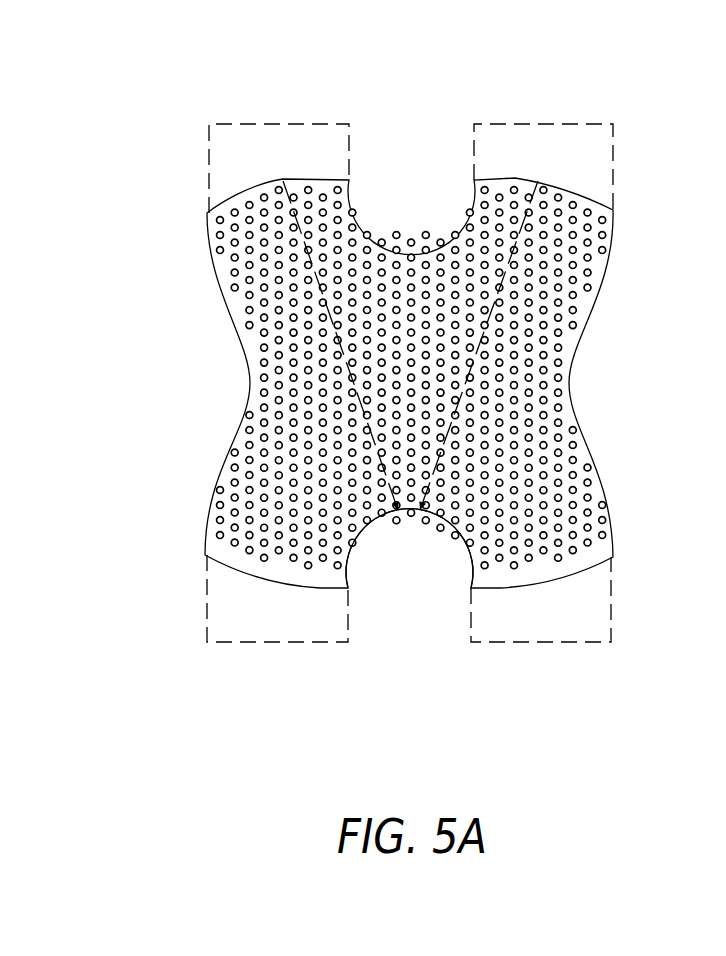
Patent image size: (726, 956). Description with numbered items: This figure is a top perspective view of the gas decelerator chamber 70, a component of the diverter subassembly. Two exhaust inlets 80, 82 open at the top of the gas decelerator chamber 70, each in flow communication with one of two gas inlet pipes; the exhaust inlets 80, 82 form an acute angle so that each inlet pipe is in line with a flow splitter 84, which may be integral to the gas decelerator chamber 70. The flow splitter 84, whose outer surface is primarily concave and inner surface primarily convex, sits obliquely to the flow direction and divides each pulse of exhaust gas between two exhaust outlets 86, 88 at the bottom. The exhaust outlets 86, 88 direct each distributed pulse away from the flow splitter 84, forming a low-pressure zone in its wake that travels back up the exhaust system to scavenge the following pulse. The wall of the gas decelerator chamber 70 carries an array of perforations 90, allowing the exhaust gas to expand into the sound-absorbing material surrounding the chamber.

The gas decelerator chamber 70 is at (398, 383).
The exhaust inlet 80 is at (280, 172).
The exhaust inlet 82 is at (544, 172).
The flow splitter 84 is at (409, 547).
The exhaust outlet 86 is at (267, 590).
The exhaust outlet 88 is at (548, 590).
The perforations 90 is at (263, 299).